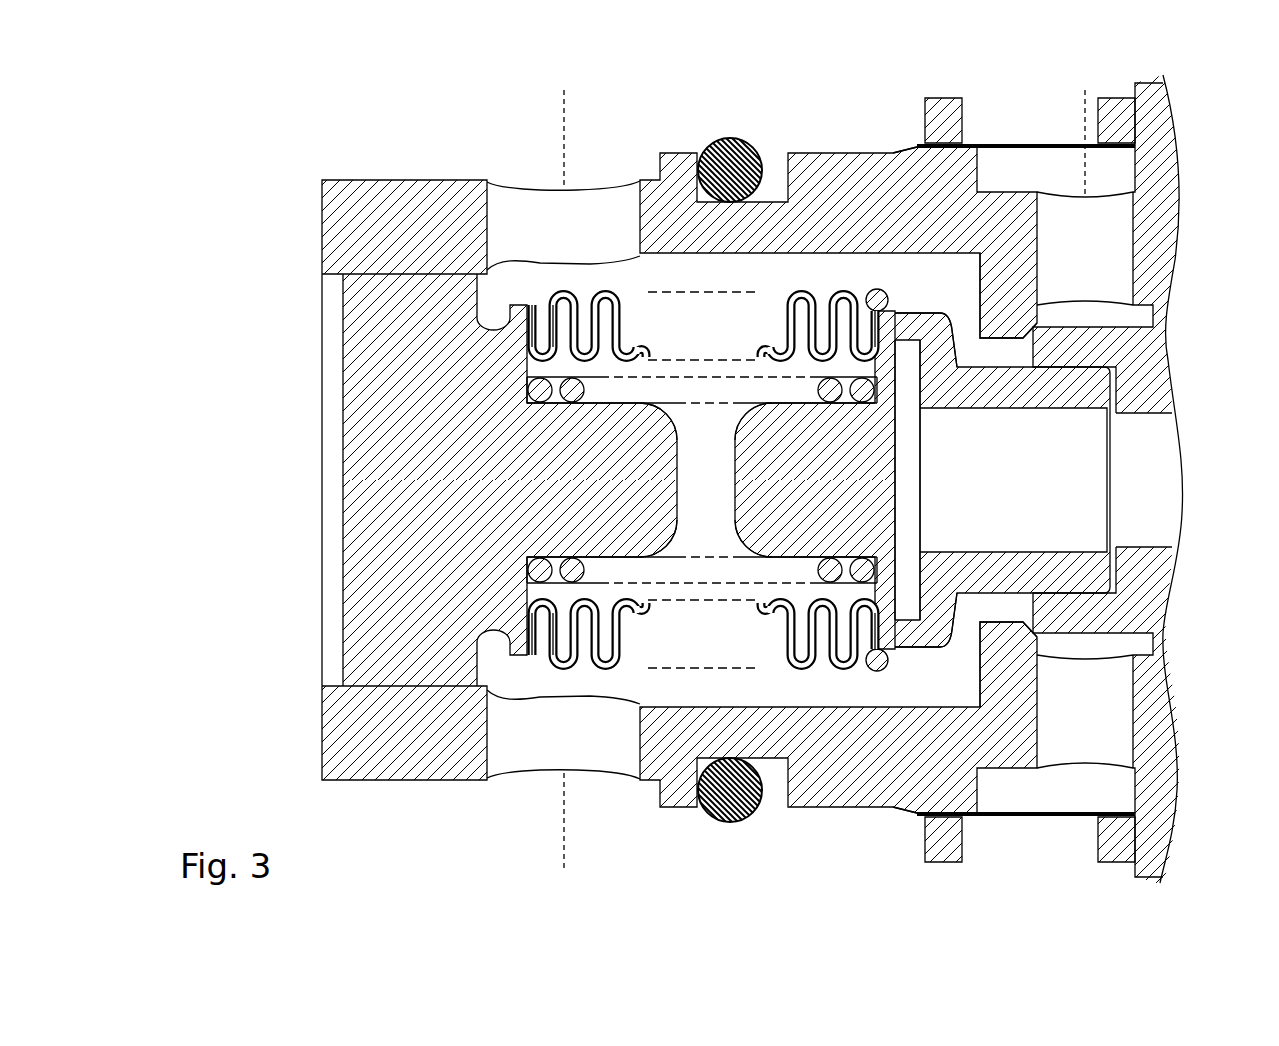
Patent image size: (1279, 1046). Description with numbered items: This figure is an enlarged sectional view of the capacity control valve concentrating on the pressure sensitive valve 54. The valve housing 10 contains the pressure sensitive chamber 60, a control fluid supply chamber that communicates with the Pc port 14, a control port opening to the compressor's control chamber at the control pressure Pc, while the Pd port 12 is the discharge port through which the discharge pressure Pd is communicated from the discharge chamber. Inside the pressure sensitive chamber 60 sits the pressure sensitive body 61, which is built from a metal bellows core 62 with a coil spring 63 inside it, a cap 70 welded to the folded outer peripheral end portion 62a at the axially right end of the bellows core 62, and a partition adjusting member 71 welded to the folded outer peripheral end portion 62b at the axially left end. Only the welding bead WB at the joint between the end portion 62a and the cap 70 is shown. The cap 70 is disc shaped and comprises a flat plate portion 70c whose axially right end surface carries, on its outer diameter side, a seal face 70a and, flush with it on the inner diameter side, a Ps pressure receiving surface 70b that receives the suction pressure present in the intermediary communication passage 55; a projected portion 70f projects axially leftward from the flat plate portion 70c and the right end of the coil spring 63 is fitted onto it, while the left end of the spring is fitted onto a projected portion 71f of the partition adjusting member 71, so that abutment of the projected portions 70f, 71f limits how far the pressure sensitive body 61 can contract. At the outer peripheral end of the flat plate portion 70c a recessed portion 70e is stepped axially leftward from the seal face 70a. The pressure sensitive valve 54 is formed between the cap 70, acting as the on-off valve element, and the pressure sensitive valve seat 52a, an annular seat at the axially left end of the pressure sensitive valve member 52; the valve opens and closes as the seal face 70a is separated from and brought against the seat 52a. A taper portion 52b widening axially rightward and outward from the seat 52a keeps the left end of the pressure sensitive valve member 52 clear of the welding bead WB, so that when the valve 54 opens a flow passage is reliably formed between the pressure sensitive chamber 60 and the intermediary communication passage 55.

The valve housing 10 is at (397, 158).
The Pc port 14 is at (505, 180).
The control pressure Pc is at (563, 469).
The discharge pressure Pd is at (1085, 132).
The pressure sensitive chamber 60 is at (683, 275).
The welding bead WB is at (874, 290).
The pressure sensitive valve 54 is at (997, 53).
The pressure sensitive valve seat 52a is at (882, 292).
The seal face 70a is at (928, 313).
The Pd port 12 is at (1043, 240).
The intermediary communication passage 55 is at (1053, 410).
The partition adjusting member 71 is at (332, 452).
The projected portion 71f is at (655, 532).
The cap 70 is at (1013, 614).
The Ps pressure receiving surface 70b is at (897, 483).
The flat plate portion 70c is at (912, 527).
The recessed portion 70e is at (887, 670).
The projected portion 70f is at (753, 534).
The pressure sensitive body 61 is at (531, 675).
The bellows core 62 is at (610, 685).
The folded outer peripheral end portion 62a is at (853, 662).
The folded outer peripheral end portion 62b is at (548, 655).
The coil spring 63 is at (815, 565).
The pressure sensitive valve member 52 is at (995, 640).
The taper portion 52b is at (900, 640).